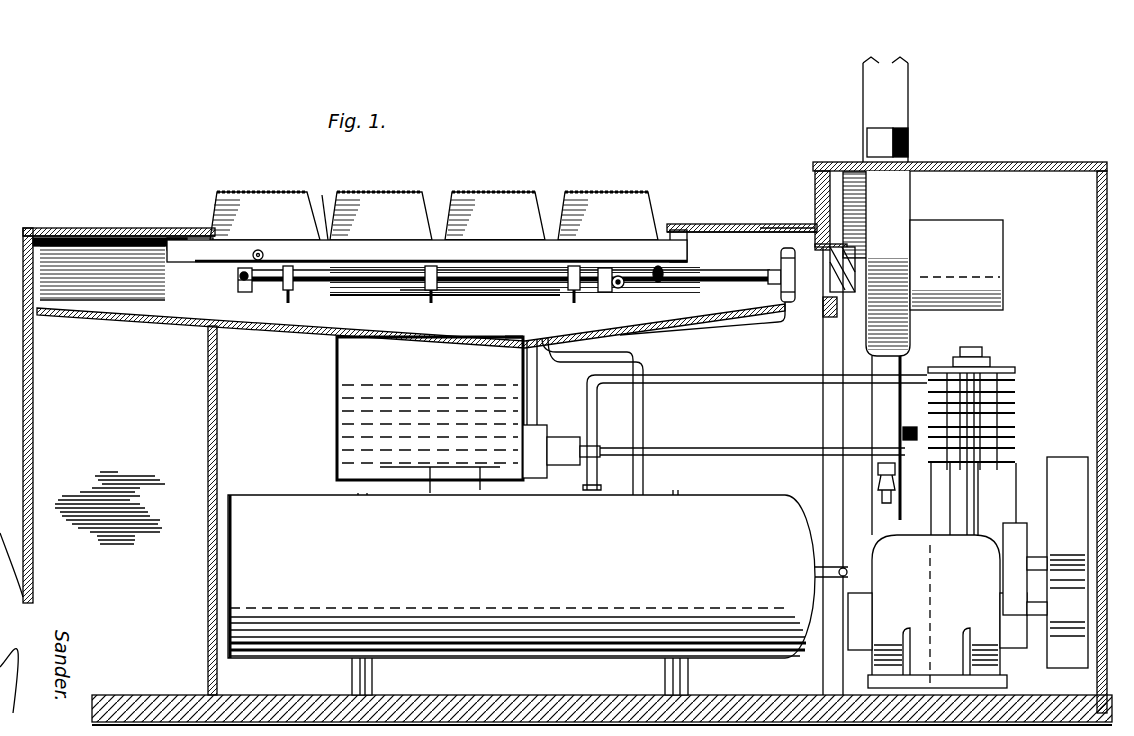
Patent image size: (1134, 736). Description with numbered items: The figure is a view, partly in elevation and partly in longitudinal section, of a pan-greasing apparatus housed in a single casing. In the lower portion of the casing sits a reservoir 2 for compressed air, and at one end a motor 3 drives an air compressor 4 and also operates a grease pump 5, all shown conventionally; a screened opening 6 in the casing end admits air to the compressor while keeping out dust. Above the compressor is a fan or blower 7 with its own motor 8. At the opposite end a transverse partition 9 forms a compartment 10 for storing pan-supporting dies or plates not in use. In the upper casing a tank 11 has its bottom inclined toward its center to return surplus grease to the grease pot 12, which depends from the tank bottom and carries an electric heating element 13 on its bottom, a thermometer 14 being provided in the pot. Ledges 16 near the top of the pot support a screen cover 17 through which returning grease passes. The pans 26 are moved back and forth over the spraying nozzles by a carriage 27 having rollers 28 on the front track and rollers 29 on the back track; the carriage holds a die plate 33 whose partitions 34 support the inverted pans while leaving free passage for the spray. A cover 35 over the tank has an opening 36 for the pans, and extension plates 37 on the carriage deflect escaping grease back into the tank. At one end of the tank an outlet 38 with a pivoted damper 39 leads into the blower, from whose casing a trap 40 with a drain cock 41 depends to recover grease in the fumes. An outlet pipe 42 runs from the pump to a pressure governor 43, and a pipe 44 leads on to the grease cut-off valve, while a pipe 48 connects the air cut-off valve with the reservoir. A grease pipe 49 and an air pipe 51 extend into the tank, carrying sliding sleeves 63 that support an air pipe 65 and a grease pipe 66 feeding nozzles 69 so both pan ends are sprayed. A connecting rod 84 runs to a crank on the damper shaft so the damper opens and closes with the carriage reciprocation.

The reservoir 2 is at (521, 576).
The motor 3 is at (920, 605).
The air compressor 4 is at (1015, 472).
The grease pump 5 is at (562, 441).
The screened opening 6 is at (1088, 514).
The fan or blower 7 is at (896, 210).
The motor 8 is at (996, 222).
The transverse partition 9 is at (219, 445).
The compartment 10 is at (110, 483).
The tank 11 is at (102, 294).
The grease pot 12 is at (430, 408).
The electric heating element 13 is at (430, 490).
The thermometer 14 is at (494, 420).
The ledges 16 is at (504, 346).
The cover 17 is at (487, 320).
The pans 26 is at (507, 193).
The carriage 27 is at (678, 262).
The rollers 28 is at (196, 263).
The rollers 29 is at (262, 248).
The die plate 33 is at (333, 240).
The partitions 34 is at (543, 240).
The cover 35 is at (130, 231).
The opening 36 is at (672, 233).
The extension plates 37 is at (118, 230).
The outlet 38 is at (801, 304).
The damper 39 is at (857, 263).
The trap 40 is at (880, 411).
The drain cock 41 is at (884, 503).
The outlet pipe 42 is at (537, 410).
The pressure governor 43 is at (781, 272).
The pipe 44 is at (725, 282).
The pipe 48 is at (643, 436).
The pipe 49 is at (657, 283).
The pipe 51 is at (241, 279).
The sleeves 63 is at (246, 290).
The air pipe 65 is at (440, 297).
The grease pipe 66 is at (380, 296).
The nozzles 69 is at (428, 268).
The connecting rod 84 is at (787, 232).